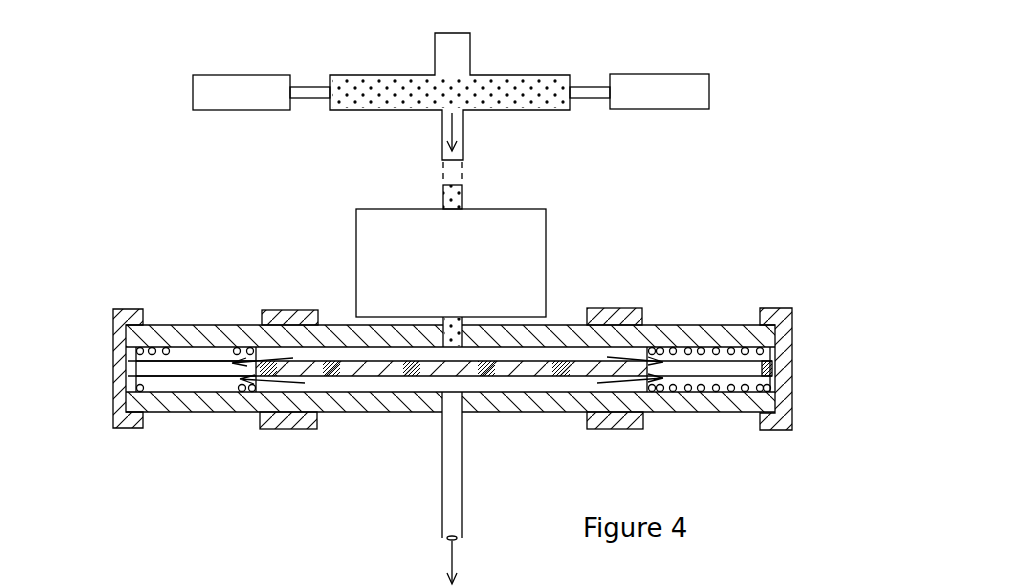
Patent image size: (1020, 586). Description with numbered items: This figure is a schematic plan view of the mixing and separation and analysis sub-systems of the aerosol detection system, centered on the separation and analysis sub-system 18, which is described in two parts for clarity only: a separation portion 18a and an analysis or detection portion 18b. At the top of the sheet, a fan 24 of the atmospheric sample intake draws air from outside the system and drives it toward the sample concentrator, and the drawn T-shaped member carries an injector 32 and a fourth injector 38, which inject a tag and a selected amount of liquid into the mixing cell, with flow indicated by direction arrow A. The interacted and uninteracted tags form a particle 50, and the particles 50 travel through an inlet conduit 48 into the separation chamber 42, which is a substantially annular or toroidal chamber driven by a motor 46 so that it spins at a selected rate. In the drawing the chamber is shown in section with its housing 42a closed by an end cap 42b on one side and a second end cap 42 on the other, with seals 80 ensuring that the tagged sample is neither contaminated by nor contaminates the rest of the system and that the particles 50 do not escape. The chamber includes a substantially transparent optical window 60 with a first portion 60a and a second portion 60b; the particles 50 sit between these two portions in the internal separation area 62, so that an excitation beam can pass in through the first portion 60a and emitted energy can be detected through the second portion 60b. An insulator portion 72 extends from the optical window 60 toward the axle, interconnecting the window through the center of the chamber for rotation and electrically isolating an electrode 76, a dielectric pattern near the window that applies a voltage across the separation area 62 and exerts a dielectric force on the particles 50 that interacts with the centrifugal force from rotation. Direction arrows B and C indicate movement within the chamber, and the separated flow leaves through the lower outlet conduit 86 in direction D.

The separation and analysis sub-system 18 is at (752, 260).
The separation portion 18a is at (598, 300).
The analysis or detection portion 18b is at (740, 312).
The fan 24 is at (467, 52).
The injector 32 is at (667, 78).
The fourth injector 38 is at (221, 77).
The separation chamber 42 is at (802, 367).
The housing 42a is at (550, 327).
The end cap 42b is at (112, 372).
The motor 46 is at (527, 227).
The inlet conduit 48 is at (458, 193).
The particle 50 is at (385, 92).
The optical window 60 is at (168, 388).
The first portion of the optical window 60a is at (160, 330).
The second portion of the optical window 60b is at (199, 430).
The separation area 62 is at (710, 366).
The insulator portion 72 is at (403, 370).
The electrode 76 is at (170, 347).
The seals 80 is at (148, 323).
The outlet conduit 86 is at (462, 479).
The flow direction A is at (453, 128).
The flow direction B is at (270, 355).
The flow direction C is at (278, 380).
The flow direction D is at (455, 558).